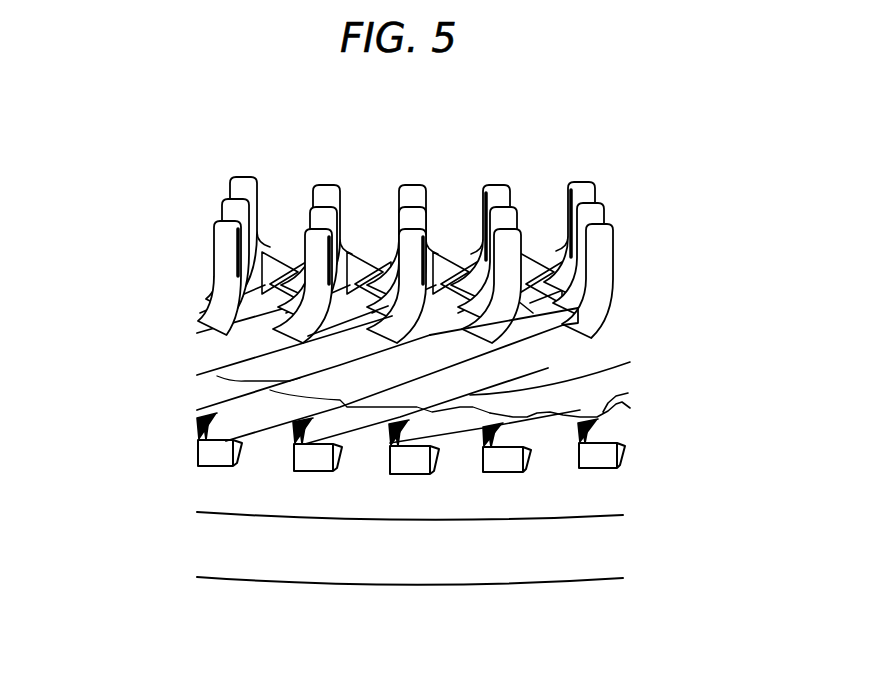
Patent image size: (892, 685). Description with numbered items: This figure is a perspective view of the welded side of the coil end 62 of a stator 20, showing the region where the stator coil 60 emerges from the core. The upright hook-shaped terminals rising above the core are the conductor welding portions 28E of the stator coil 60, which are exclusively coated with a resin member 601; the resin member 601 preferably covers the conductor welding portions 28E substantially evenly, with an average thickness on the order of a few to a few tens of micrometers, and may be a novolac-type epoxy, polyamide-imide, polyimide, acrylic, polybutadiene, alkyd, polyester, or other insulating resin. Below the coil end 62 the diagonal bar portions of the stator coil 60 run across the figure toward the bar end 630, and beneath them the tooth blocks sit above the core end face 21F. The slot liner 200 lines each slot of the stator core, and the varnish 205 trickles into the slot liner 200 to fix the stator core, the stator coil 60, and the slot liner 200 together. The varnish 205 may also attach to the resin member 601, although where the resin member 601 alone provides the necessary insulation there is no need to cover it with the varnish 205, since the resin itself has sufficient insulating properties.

The stator 20 is at (130, 468).
The stator core end surface 21F is at (593, 500).
The conductor welding portion 28E is at (615, 280).
The stator coil 60 is at (215, 393).
The coil end 62 is at (413, 184).
The slot liner 200 is at (610, 453).
The varnish 205 is at (232, 425).
The resin member 601 is at (580, 195).
The bus bar end portion 630 is at (575, 330).